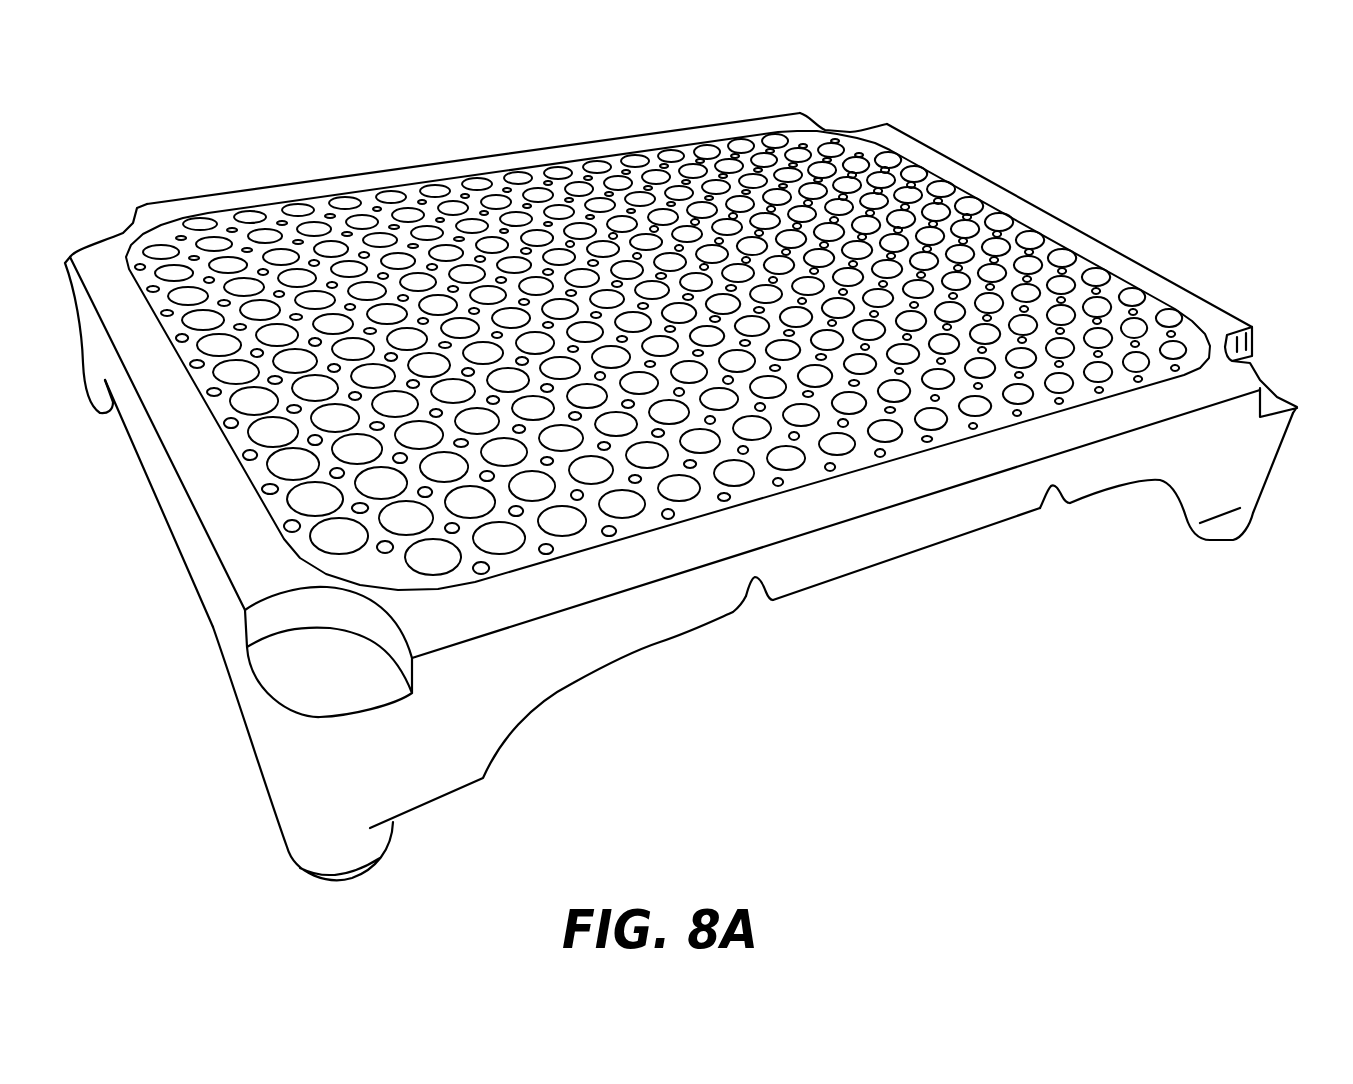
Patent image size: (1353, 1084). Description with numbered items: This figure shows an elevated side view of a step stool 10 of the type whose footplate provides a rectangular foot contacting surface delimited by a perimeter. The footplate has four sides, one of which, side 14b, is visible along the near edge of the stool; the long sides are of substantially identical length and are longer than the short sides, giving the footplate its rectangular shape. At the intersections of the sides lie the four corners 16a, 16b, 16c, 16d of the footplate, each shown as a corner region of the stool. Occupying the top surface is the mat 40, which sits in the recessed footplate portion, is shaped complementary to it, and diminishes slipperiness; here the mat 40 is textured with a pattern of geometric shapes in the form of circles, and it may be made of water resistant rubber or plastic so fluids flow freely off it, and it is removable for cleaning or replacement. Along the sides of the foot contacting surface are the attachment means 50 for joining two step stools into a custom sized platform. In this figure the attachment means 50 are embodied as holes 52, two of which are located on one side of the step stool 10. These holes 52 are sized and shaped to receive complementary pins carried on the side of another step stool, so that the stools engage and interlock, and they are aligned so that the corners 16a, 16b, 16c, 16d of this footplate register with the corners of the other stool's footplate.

The step stool 10 is at (1082, 208).
The side of the footplate 14b is at (1233, 463).
The corner of the footplate 16a is at (848, 106).
The corner of the footplate 16b is at (286, 731).
The corner of the footplate 16c is at (1281, 361).
The corner of the footplate 16d is at (118, 222).
The mat 40 is at (277, 477).
The attachment means 50 is at (746, 636).
The holes 52 is at (1050, 503).